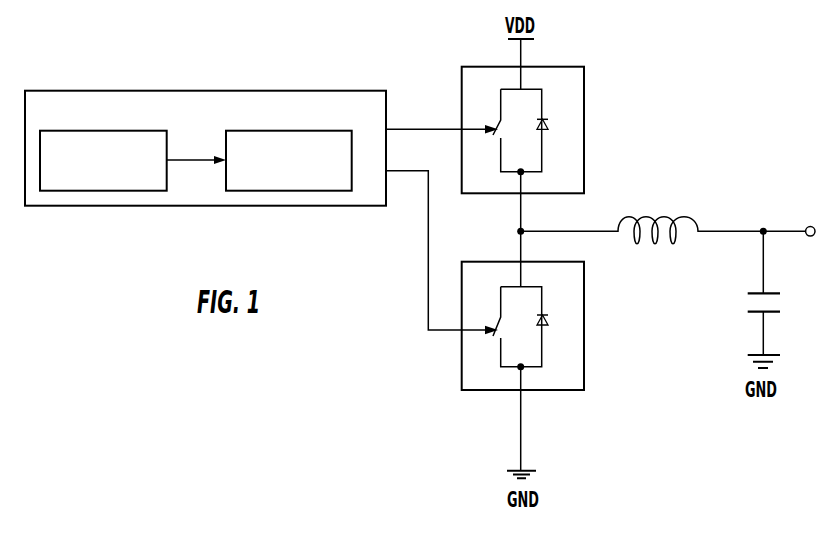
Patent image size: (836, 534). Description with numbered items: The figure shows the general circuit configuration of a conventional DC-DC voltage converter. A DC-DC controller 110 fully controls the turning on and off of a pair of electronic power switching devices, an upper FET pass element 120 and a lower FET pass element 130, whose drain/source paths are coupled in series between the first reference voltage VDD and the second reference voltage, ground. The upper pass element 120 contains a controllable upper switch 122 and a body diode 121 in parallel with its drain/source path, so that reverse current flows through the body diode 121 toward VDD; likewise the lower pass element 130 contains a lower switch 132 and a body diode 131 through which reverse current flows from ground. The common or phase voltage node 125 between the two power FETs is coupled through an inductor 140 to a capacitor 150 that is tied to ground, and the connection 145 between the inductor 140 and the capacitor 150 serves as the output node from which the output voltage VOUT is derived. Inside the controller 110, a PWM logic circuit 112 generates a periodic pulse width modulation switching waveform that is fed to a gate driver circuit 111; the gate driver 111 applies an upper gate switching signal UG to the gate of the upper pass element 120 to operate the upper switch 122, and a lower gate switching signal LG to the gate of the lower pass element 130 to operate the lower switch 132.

The DC-DC controller 110 is at (285, 91).
The gate driver circuit 111 is at (297, 131).
The PWM logic circuit 112 is at (111, 131).
The upper FET pass element 120 is at (551, 127).
The body diode 121 is at (550, 125).
The upper switch 122 is at (498, 125).
The phase voltage node 125 is at (520, 231).
The lower FET pass element 130 is at (552, 326).
The body diode 131 is at (547, 317).
The lower switch 132 is at (497, 328).
The inductor 140 is at (675, 215).
The connection 145 is at (763, 231).
The capacitor 150 is at (787, 300).